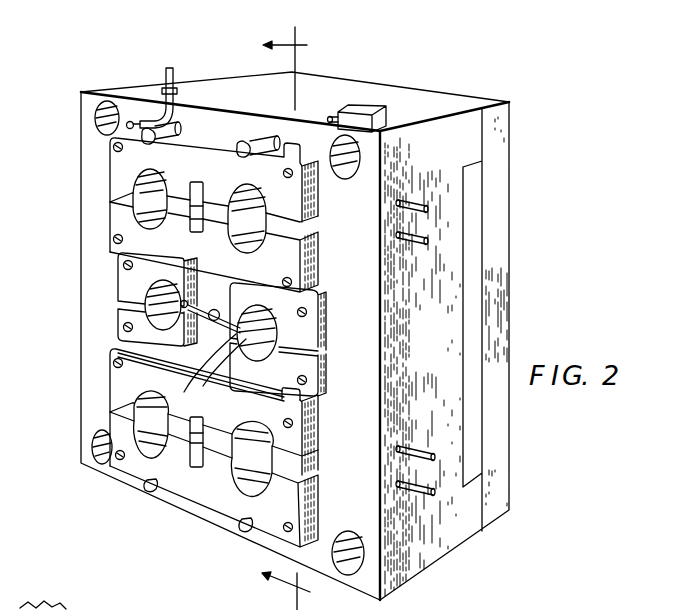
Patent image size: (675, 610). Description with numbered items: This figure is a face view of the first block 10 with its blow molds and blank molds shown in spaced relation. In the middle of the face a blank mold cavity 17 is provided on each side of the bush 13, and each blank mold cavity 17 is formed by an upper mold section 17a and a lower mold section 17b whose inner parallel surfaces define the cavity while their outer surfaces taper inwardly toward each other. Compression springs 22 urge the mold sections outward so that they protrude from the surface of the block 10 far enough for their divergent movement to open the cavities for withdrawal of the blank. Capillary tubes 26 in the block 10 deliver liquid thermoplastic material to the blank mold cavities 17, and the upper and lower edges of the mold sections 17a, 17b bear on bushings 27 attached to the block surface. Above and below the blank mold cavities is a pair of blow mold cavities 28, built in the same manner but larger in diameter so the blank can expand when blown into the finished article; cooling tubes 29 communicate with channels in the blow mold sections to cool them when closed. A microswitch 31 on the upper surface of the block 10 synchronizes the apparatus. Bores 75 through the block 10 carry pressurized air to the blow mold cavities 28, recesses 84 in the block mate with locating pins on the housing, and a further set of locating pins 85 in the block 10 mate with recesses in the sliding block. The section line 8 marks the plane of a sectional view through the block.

The block 10 is at (455, 89).
The section line 8- 8 is at (286, 318).
The bush 13 is at (192, 364).
The blank mold cavity 17 is at (136, 311).
The upper mold section 17a is at (128, 278).
The lower mold section 17b is at (123, 300).
The compression springs 22 is at (95, 605).
The capillary tubes 26 is at (213, 357).
The bushings 27 is at (298, 405).
The blow mold cavities 28 is at (108, 187).
The cooling tubes 29 is at (398, 236).
The microswitch 31 is at (360, 118).
The bores 75 is at (161, 118).
The recesses 84 is at (105, 120).
The locating pins 85 is at (242, 148).